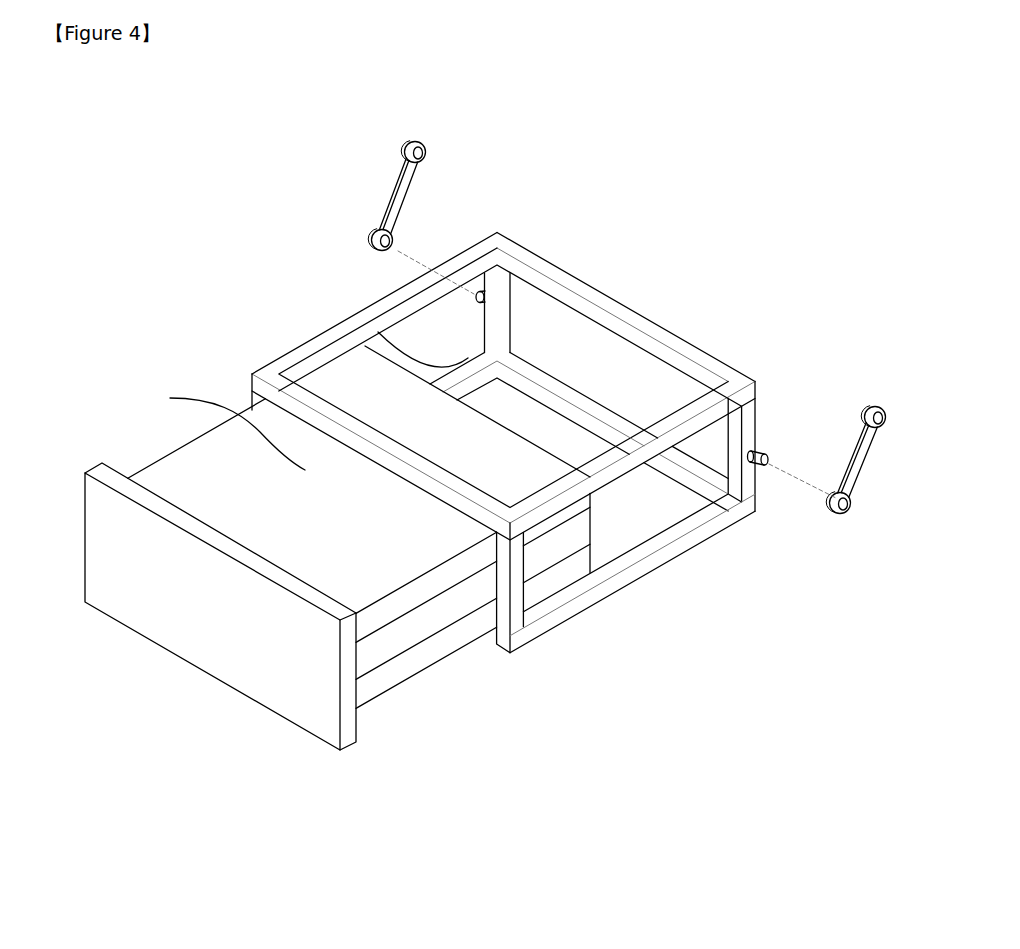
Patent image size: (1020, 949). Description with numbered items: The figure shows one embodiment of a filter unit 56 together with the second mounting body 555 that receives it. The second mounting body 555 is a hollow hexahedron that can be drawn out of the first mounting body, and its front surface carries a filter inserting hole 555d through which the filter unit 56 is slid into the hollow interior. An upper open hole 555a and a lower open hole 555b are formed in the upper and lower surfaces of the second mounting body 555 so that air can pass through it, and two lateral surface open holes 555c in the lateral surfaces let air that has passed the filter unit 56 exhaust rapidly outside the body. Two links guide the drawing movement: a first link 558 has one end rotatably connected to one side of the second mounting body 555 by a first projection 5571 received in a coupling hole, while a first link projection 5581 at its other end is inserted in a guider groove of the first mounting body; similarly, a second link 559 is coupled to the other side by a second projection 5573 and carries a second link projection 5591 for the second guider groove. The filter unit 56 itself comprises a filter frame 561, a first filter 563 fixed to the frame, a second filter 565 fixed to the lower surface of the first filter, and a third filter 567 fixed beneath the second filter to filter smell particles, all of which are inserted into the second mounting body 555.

The second mounting body 555 is at (477, 411).
The upper open hole 555a is at (560, 449).
The lower open hole 555b is at (668, 503).
The lateral surface open hole 555c is at (378, 332).
The filter inserting hole 555d is at (693, 268).
The first projection 5571 is at (481, 292).
The second projection 5573 is at (767, 455).
The first link 558 is at (396, 196).
The first link projection 5581 is at (402, 142).
The second link 559 is at (834, 456).
The second link projection 5591 is at (880, 415).
The filter unit 56 is at (345, 575).
The filter frame 561 is at (315, 710).
The first filter 563 is at (437, 583).
The second filter 565 is at (417, 627).
The third filter 567 is at (405, 668).